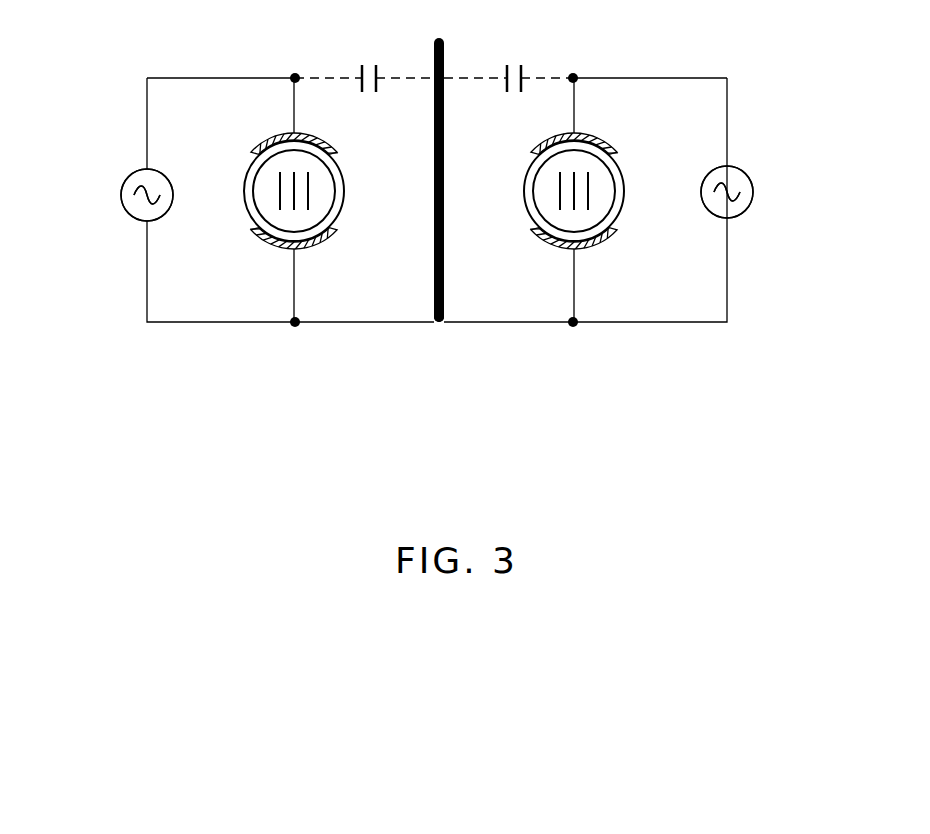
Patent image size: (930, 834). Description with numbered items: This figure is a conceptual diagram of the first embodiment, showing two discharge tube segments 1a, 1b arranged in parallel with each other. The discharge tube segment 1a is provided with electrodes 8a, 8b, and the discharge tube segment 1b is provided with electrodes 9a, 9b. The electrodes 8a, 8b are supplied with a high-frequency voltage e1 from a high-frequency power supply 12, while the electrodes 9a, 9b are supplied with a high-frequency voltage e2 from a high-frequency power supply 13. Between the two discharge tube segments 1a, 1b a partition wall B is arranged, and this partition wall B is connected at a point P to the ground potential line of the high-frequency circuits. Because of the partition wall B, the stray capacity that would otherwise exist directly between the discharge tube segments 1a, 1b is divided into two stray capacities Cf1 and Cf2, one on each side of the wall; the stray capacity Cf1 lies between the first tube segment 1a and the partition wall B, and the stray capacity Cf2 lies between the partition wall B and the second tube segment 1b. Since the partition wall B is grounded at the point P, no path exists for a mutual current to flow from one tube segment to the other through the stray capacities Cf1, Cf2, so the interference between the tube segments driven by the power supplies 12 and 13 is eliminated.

The discharge tube segment 1a is at (247, 211).
The discharge tube segment 1b is at (625, 208).
The electrode 8a is at (317, 136).
The electrode 8b is at (317, 247).
The electrode 9a is at (597, 136).
The electrode 9b is at (596, 248).
The high-frequency power supply 12 is at (132, 172).
The high-frequency power supply 13 is at (745, 173).
The partition wall B is at (441, 36).
The point P is at (447, 320).
The stray capacity Cf1 is at (360, 64).
The stray capacity Cf2 is at (508, 64).
The voltage e1 is at (121, 195).
The voltage e2 is at (755, 193).